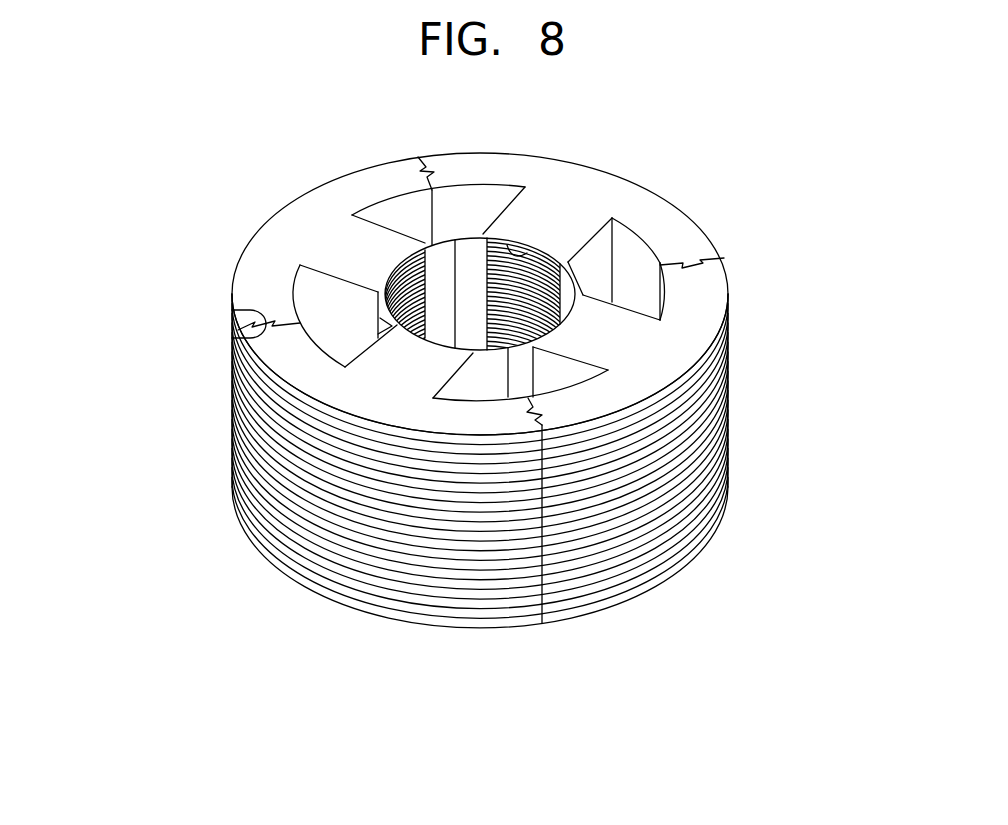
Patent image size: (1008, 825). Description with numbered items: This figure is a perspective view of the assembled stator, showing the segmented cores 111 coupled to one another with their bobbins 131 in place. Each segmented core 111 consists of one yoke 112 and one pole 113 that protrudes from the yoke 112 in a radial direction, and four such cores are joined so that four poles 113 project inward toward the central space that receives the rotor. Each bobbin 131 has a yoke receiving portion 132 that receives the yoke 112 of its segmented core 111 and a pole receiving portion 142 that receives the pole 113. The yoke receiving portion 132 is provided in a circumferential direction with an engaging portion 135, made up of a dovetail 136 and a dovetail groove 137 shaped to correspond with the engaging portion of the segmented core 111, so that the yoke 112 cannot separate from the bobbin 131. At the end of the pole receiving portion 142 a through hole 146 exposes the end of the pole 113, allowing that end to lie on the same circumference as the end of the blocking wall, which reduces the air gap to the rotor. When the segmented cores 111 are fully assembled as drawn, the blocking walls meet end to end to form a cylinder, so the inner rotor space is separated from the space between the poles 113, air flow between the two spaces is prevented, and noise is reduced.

The segmented core 111 is at (495, 587).
The yoke 112 is at (293, 495).
The pole 113 is at (407, 330).
The bobbin 131 is at (646, 195).
The yoke receiving portion 132 is at (670, 218).
The pole receiving portion 142 is at (598, 262).
The engaging portion 135 is at (208, 323).
The dovetail 136 is at (250, 338).
The dovetail groove 137 is at (232, 310).
The through hole 146 is at (513, 247).